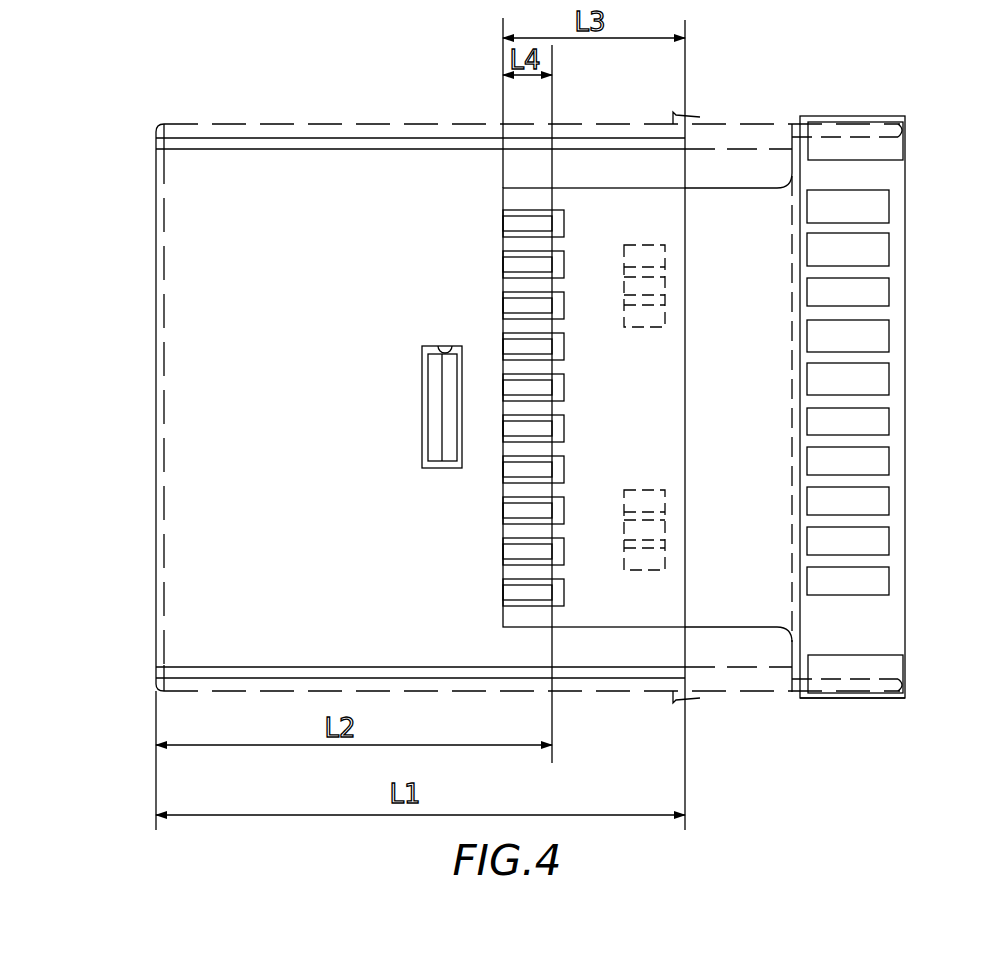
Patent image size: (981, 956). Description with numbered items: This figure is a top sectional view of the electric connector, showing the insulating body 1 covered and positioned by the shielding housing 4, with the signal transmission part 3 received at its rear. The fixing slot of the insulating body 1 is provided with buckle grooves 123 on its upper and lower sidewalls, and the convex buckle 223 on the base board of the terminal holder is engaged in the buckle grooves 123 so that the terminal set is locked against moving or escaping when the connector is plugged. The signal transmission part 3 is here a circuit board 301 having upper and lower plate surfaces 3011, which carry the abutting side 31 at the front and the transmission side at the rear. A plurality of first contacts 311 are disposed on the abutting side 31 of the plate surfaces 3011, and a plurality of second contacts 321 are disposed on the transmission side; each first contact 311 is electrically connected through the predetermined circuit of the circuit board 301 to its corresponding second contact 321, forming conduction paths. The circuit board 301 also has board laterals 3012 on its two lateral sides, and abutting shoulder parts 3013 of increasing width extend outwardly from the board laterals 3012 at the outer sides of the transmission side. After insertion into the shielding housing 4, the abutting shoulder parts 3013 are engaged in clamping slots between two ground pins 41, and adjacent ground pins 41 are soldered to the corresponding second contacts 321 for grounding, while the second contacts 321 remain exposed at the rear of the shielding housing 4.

The insulating body 1 is at (199, 629).
The signal transmission part 3 is at (913, 252).
The shielding housing 4 is at (583, 118).
The abutting side 31 is at (625, 730).
The ground pins 41 is at (885, 680).
The buckle grooves 123 is at (452, 346).
The convex buckle 223 is at (457, 410).
The circuit board 301 is at (762, 76).
The first contacts 311 is at (558, 594).
The second contacts 321 is at (865, 340).
The upper and lower plate surfaces 3011 is at (748, 220).
The board laterals 3012 is at (735, 627).
The abutting shoulder parts 3013 is at (834, 698).